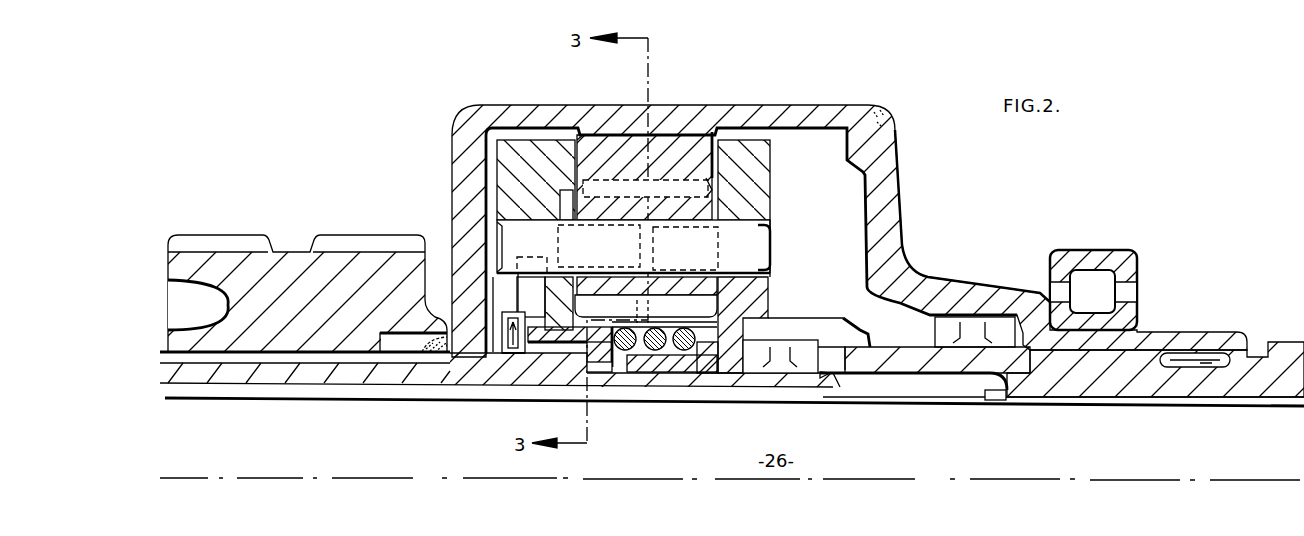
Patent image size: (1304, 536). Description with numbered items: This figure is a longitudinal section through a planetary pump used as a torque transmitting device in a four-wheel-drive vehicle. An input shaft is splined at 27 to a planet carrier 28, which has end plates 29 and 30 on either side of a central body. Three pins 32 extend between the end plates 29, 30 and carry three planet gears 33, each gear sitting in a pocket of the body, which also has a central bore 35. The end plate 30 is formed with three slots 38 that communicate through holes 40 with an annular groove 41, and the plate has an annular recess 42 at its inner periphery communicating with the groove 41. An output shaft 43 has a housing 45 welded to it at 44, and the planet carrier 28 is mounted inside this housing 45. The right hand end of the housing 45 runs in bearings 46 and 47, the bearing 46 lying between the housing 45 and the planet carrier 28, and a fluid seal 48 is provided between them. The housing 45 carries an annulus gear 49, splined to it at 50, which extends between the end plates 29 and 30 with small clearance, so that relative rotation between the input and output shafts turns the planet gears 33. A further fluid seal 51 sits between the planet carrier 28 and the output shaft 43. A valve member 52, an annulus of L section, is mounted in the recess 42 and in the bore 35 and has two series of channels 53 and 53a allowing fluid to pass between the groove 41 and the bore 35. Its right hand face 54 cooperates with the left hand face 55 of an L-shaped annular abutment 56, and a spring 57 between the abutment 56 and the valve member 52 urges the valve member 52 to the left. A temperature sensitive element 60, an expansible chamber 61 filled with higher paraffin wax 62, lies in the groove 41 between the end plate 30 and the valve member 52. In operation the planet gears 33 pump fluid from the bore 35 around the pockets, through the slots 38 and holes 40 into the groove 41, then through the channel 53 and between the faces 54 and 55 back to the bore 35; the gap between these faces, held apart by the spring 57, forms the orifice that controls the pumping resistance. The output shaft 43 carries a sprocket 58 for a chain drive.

The spline connection 27 is at (1068, 400).
The planet carrier 28 is at (768, 308).
The end plate 29 is at (752, 158).
The end plate 30 is at (537, 157).
The pins 32 is at (745, 247).
The planet gears 33 is at (712, 185).
The central bore 35 is at (717, 337).
The slots 38 is at (560, 208).
The holes 40 is at (562, 263).
The annular groove 41 is at (523, 290).
The annular recess 42 is at (533, 333).
The output shaft 43 is at (293, 373).
The weld 44 is at (430, 357).
The housing 45 is at (727, 120).
The bearing 46 is at (1183, 353).
The bearing 47 is at (1130, 268).
The fluid seal 48 is at (958, 317).
The annulus gear 49 is at (628, 162).
The spline connection 50 is at (662, 148).
The fluid seal 51 is at (783, 367).
The valve member 52 is at (563, 340).
The channels 53 is at (512, 343).
The channels 53a is at (593, 366).
The right hand face 54 is at (627, 357).
The left hand face 55 is at (648, 358).
The L-shaped annular abutment 56 is at (713, 373).
The spring 57 is at (657, 329).
The sprocket 58 is at (243, 258).
The temperature sensitive element 60 is at (507, 337).
The expansible chamber 61 is at (495, 327).
The higher paraffin wax 62 is at (507, 347).